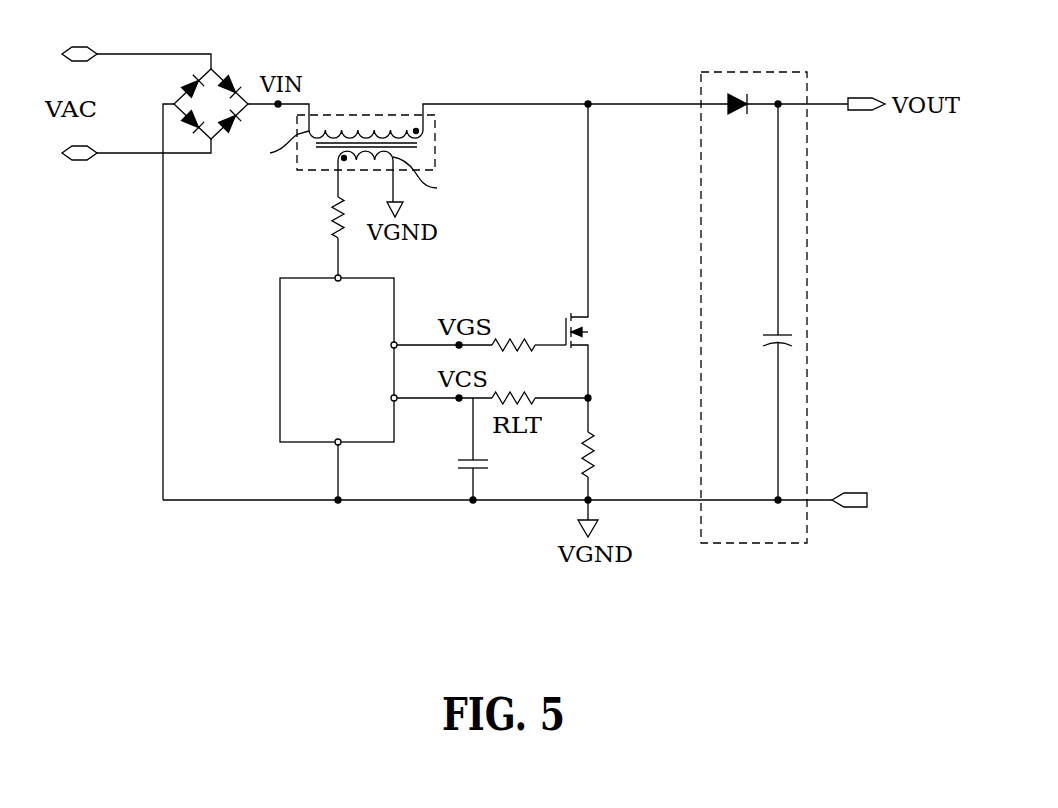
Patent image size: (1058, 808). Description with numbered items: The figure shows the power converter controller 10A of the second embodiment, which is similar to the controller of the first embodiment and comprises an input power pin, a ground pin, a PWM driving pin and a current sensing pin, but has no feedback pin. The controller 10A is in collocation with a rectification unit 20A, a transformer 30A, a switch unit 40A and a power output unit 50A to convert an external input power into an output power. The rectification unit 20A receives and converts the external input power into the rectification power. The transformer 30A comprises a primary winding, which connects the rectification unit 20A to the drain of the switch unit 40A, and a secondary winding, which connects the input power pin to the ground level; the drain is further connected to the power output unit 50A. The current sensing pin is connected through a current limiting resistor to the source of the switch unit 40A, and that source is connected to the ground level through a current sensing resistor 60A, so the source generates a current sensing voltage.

The power converter controller 10A is at (280, 348).
The rectification unit 20A is at (219, 75).
The transformer 30A is at (393, 112).
The switch unit 40A is at (583, 327).
The power output unit 50A is at (753, 72).
The current sensing resistor 60A is at (589, 444).